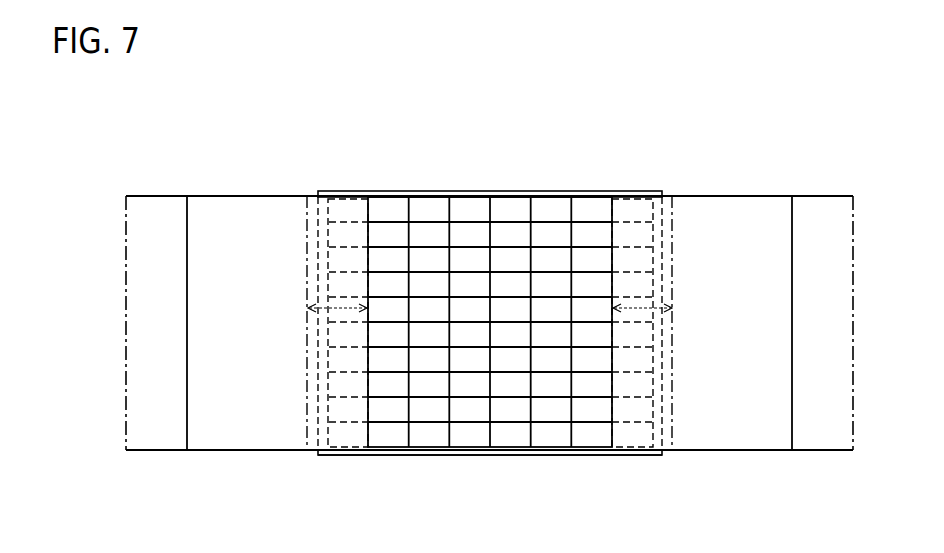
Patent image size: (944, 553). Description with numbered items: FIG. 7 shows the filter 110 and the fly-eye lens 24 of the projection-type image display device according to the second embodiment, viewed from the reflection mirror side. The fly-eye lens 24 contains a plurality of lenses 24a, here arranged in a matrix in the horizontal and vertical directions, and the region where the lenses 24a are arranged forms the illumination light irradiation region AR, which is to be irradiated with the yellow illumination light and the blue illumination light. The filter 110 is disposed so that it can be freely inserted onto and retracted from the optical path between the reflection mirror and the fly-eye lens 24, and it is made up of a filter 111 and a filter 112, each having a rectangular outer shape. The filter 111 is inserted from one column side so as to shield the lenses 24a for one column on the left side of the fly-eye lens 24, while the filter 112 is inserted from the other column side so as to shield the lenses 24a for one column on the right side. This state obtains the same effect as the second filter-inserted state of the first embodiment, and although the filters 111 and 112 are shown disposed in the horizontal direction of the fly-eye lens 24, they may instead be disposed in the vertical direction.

The filter 110 is at (489, 289).
The filter 111 is at (222, 196).
The filter 112 is at (742, 196).
The fly-eye lens 24 is at (490, 291).
The lenses 24a is at (356, 208).
The illumination light irradiation region AR is at (542, 455).